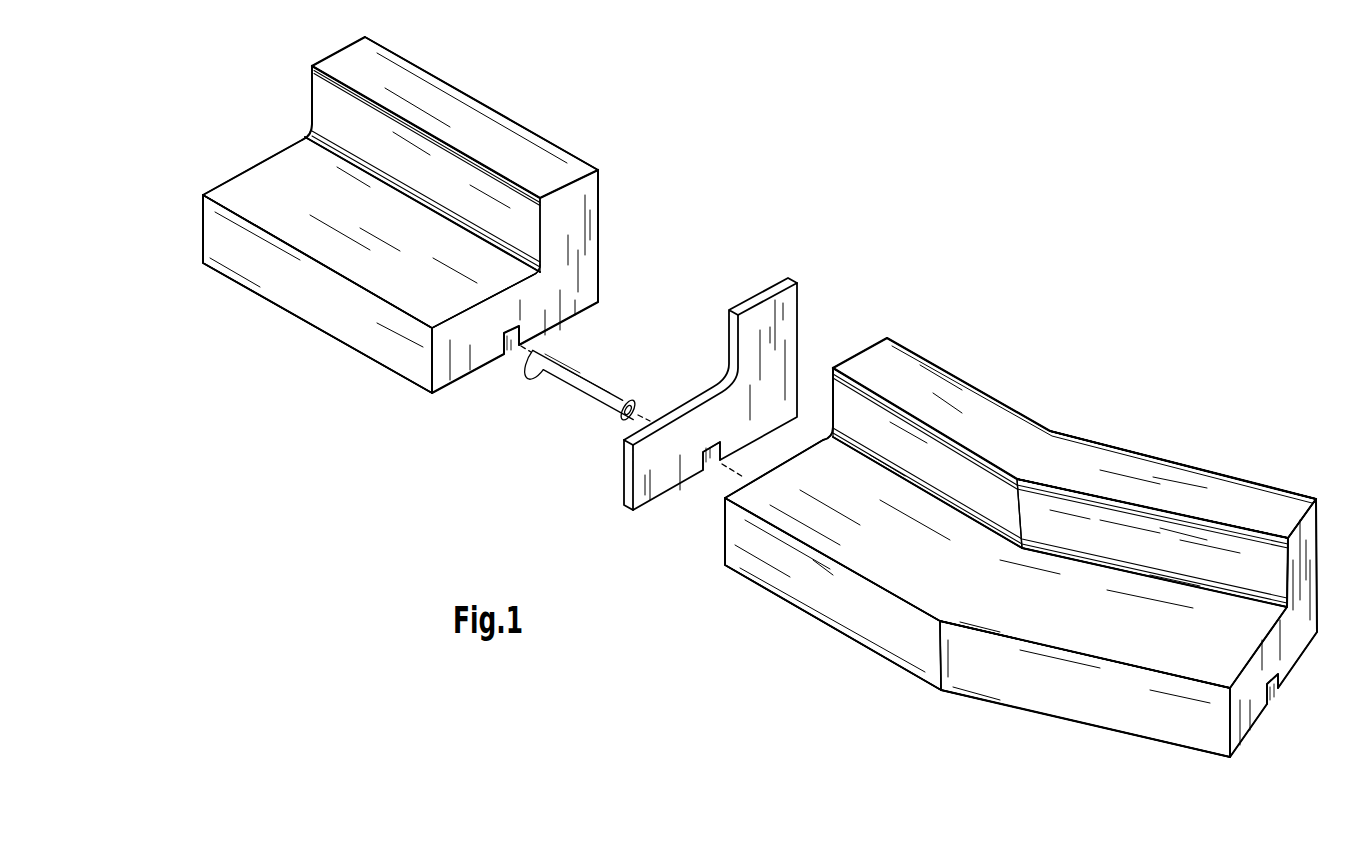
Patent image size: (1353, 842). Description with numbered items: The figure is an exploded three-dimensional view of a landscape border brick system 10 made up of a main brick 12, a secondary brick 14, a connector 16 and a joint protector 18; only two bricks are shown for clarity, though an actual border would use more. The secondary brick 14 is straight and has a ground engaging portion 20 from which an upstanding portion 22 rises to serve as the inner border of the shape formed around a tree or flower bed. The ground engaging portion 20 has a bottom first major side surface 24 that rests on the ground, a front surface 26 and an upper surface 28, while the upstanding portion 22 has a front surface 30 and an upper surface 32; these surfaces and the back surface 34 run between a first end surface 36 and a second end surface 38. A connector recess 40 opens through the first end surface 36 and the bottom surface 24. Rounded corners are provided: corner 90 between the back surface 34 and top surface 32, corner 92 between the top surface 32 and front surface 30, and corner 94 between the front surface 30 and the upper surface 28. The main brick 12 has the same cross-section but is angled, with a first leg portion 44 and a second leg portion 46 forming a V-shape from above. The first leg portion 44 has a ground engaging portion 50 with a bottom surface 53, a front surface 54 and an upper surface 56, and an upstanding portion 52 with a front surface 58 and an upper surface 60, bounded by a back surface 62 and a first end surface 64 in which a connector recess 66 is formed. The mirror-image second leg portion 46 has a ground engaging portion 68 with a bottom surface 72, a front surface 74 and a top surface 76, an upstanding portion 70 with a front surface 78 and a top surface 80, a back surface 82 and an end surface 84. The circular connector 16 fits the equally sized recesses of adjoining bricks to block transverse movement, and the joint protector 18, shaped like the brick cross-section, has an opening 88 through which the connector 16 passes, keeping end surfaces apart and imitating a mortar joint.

The landscape border brick system 10 is at (912, 196).
The main brick 12 is at (1140, 328).
The secondary brick 14 is at (295, 404).
The connector 16 is at (579, 404).
The joint protector 18 is at (634, 524).
The ground engaging portion 20 is at (372, 202).
The upstanding portion 22 is at (488, 174).
The first major side surface 24 is at (388, 372).
The front surface 26 is at (380, 327).
The upper surface 28 is at (353, 257).
The front surface 30 is at (397, 145).
The upper surface 32 is at (397, 83).
The back surface 34 is at (600, 226).
The first end surface 36 is at (560, 285).
The second end surface 38 is at (258, 163).
The connector recess 40 is at (515, 347).
The first leg portion 44 is at (1209, 442).
The second leg portion 46 is at (997, 346).
The ground engaging portion 50 is at (1131, 611).
The upstanding portion 52 is at (1147, 532).
The first major side surface 53 is at (1255, 725).
The front surface 54 is at (983, 667).
The upper surface 56 is at (1100, 640).
The front surface 58 is at (1217, 553).
The upper surface 60 is at (1095, 478).
The back surface 62 is at (1317, 530).
The first end surface 64 is at (1303, 615).
The connector recess 66 is at (1273, 688).
The ground engaging portion 68 is at (892, 519).
The upstanding portion 70 is at (948, 452).
The first major side surface 72 is at (765, 592).
The front surface 74 is at (822, 590).
The top surface 76 is at (913, 575).
The front surface 78 is at (970, 478).
The top surface 80 is at (1000, 425).
The back surface 82 is at (920, 350).
The end surface 84 is at (832, 400).
The opening 88 is at (710, 463).
The corner 90 is at (500, 110).
The corner 92 is at (463, 147).
The corner 94 is at (503, 220).